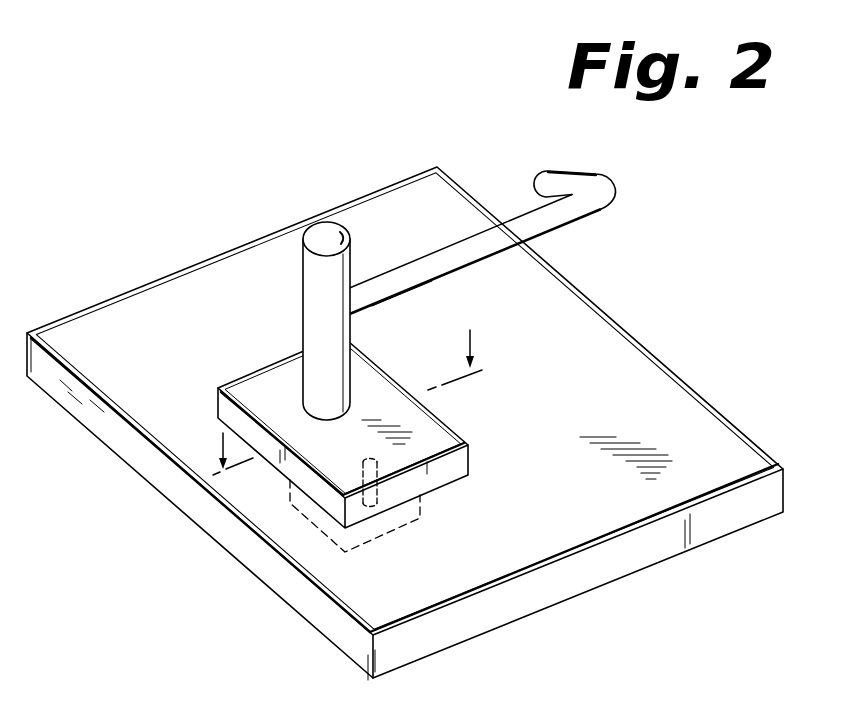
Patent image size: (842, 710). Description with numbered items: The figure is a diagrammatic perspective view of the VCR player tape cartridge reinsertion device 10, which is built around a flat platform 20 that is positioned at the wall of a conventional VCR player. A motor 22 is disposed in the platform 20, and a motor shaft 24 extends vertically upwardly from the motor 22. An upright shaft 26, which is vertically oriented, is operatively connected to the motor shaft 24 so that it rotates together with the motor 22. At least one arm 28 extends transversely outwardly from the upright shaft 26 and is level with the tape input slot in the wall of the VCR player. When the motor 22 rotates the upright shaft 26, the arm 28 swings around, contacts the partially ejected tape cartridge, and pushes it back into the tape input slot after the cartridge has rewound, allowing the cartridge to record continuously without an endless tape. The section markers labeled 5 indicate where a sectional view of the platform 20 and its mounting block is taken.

The VCR player tape cartridge reinsertion device 10 is at (133, 241).
The platform 20 is at (665, 341).
The motor 22 is at (395, 523).
The motor shaft 24 is at (379, 490).
The upright shaft 26 is at (317, 295).
The arm 28 is at (487, 247).
The section line for FIG. 5 is at (356, 419).